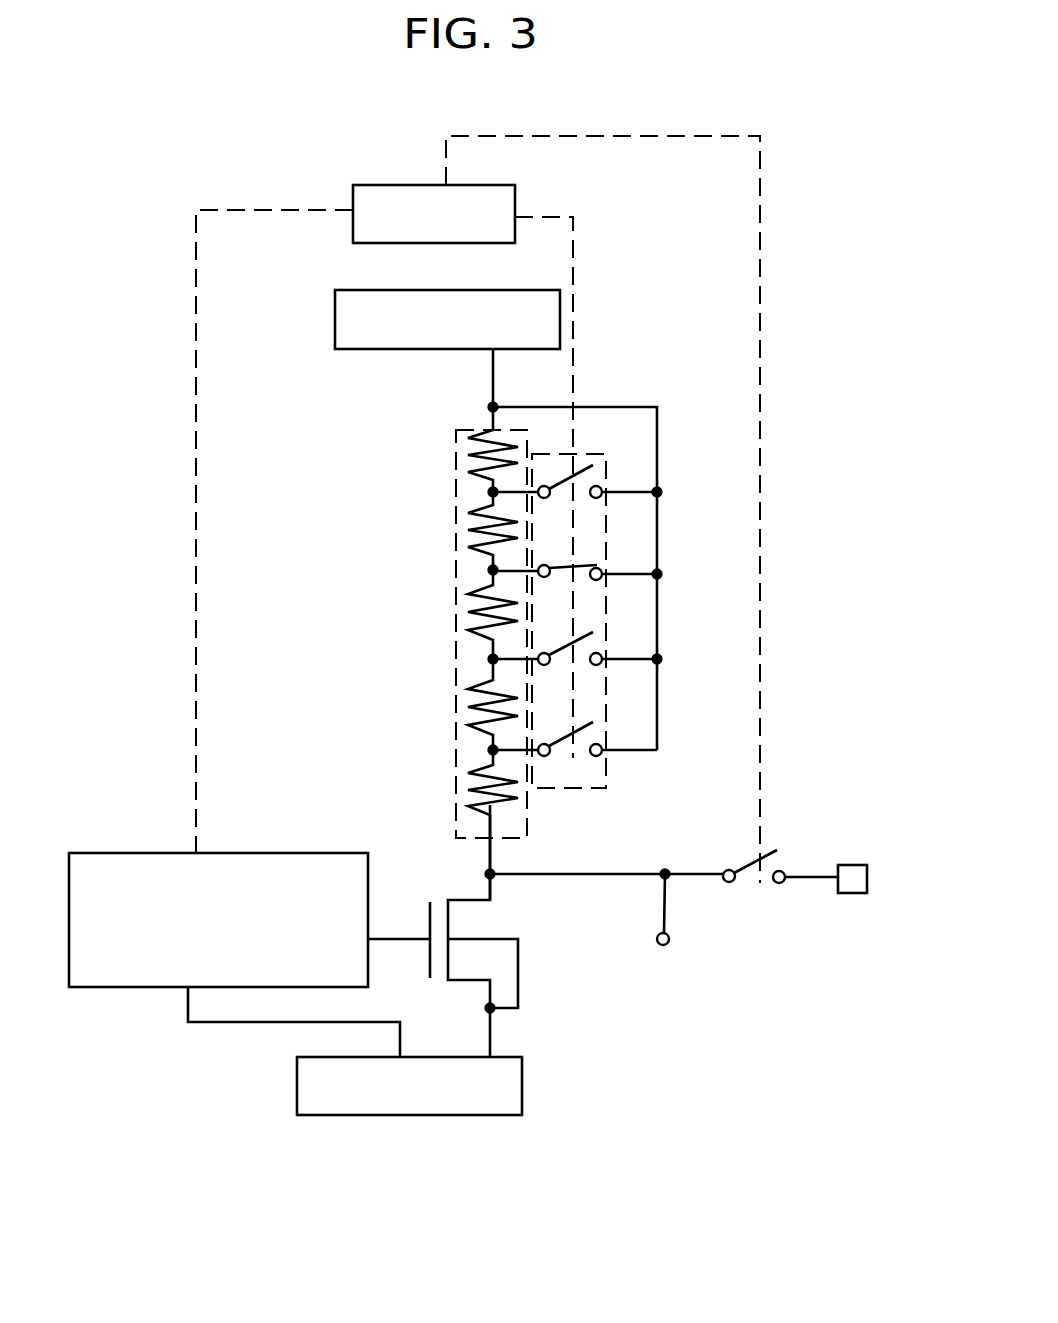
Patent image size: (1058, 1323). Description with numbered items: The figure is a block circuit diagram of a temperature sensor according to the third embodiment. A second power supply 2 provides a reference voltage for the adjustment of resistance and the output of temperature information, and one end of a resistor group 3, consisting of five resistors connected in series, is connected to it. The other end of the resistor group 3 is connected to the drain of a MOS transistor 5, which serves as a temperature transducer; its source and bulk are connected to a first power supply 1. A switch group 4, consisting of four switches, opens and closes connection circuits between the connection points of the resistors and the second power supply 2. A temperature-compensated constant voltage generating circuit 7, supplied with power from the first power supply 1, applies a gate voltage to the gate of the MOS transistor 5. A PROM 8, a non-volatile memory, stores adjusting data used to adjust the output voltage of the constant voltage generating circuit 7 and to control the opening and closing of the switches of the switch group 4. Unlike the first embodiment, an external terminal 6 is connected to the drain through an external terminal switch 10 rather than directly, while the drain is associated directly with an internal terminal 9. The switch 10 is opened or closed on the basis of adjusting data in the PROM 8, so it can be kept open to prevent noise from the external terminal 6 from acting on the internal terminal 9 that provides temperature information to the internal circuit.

The first power supply 1 is at (522, 1062).
The second power supply 2 is at (335, 330).
The resistor group 3 is at (453, 466).
The switch group 4 is at (607, 770).
The MOS transistor 5 is at (549, 967).
The external terminal 6 is at (867, 870).
The temperature-compensated constant voltage generating circuit 7 is at (232, 851).
The PROM 8 is at (515, 196).
The internal terminal 9 is at (669, 939).
The external terminal switch 10 is at (780, 858).